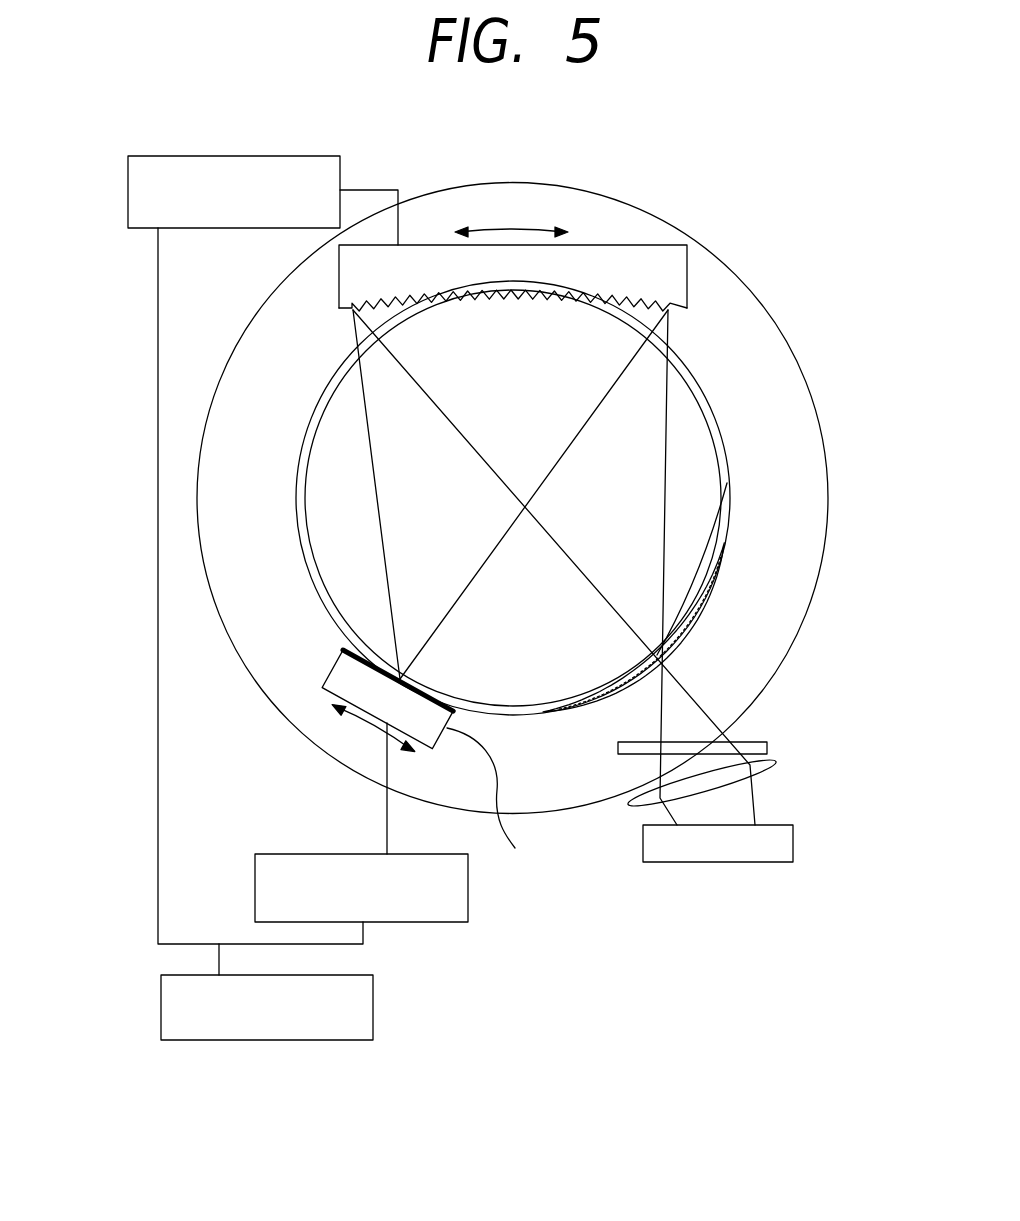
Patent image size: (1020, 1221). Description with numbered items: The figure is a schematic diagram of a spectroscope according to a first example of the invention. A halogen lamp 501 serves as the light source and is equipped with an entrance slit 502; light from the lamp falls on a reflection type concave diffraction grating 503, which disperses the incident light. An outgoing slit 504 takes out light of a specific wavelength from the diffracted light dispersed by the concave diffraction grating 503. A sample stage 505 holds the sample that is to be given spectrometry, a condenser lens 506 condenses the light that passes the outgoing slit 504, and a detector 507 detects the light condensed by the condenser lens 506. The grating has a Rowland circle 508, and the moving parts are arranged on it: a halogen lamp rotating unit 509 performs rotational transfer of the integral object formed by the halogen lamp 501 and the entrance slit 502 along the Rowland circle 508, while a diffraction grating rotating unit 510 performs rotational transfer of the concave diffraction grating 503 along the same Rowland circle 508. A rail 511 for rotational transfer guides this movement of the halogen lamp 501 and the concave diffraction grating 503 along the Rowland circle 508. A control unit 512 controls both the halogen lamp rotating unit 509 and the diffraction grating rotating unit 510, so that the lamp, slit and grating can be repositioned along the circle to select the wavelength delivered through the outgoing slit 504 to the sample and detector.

The halogen lamp 501 is at (414, 752).
The entrance slit 502 is at (400, 680).
The concave diffraction grating 503 is at (665, 287).
The outgoing slit 504 is at (722, 488).
The sample stage 505 is at (757, 742).
The condenser lens 506 is at (773, 771).
The detector 507 is at (740, 858).
The Rowland circle 508 is at (722, 518).
The halogen lamp rotating unit 509 is at (383, 907).
The diffraction grating rotating unit 510 is at (257, 208).
The rail 511 is at (252, 330).
The control unit 512 is at (290, 1027).